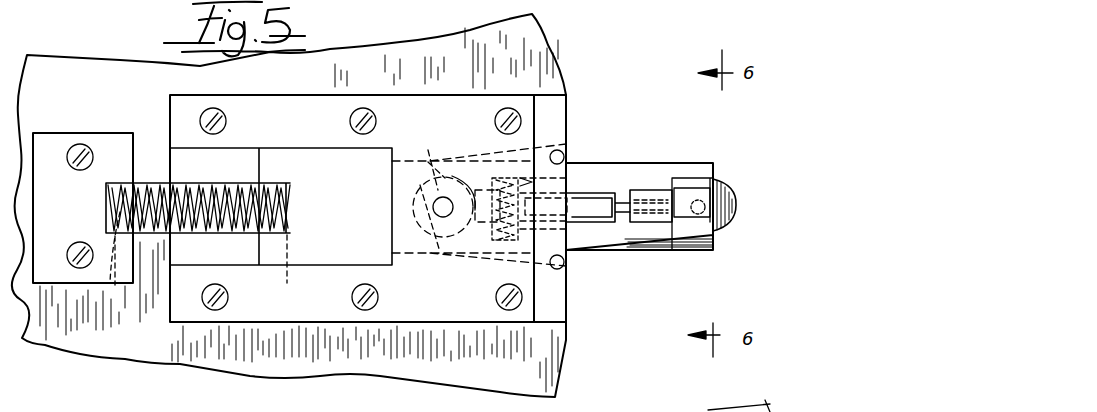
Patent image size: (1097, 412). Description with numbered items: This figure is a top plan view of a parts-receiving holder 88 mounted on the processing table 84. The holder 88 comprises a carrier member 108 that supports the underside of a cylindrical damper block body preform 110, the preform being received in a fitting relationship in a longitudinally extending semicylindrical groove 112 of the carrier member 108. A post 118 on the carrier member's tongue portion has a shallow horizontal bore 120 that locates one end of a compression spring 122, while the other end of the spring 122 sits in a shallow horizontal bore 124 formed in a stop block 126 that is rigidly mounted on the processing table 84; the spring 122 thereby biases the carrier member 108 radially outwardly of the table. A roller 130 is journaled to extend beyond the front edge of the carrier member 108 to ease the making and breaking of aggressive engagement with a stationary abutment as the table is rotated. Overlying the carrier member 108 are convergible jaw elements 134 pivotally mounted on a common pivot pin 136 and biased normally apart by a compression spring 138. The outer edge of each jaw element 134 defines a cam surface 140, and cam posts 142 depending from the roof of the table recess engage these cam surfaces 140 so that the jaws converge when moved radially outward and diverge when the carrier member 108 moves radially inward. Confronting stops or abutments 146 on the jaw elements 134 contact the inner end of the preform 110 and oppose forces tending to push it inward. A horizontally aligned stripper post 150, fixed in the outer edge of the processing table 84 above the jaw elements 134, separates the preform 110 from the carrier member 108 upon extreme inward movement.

The processing table 84 is at (412, 354).
The parts-receiving holder 88 is at (245, 326).
The carrier member 108 is at (718, 243).
The damper block body preform 110 is at (755, 213).
The semicylindrical groove 112 is at (730, 195).
The post 118 is at (283, 157).
The horizontal bore 120 is at (268, 299).
The compression spring 122 is at (143, 183).
The horizontal bore 124 is at (83, 309).
The stop block 126 is at (50, 147).
The roller 130 is at (722, 183).
The jaw elements 134 is at (605, 190).
The pivot pin 136 is at (433, 190).
The compression spring 138 is at (517, 173).
The cam surface 140 is at (586, 176).
The cam posts 142 is at (554, 150).
The stops or abutments 146 is at (652, 182).
The stripper post 150 is at (627, 192).